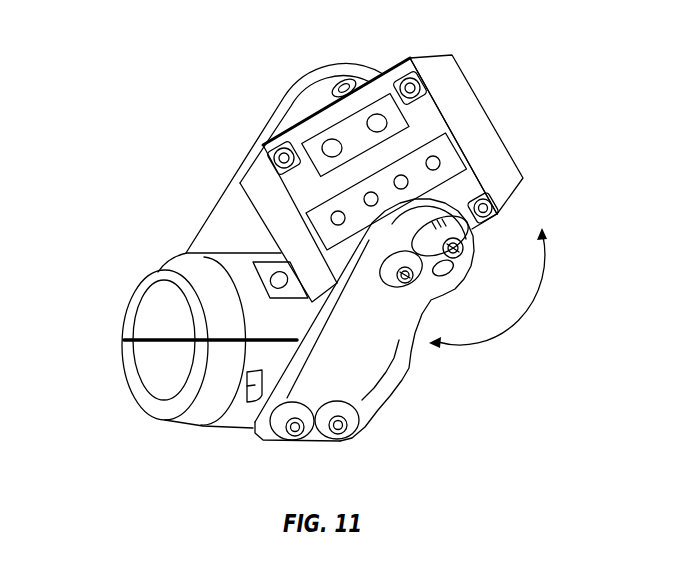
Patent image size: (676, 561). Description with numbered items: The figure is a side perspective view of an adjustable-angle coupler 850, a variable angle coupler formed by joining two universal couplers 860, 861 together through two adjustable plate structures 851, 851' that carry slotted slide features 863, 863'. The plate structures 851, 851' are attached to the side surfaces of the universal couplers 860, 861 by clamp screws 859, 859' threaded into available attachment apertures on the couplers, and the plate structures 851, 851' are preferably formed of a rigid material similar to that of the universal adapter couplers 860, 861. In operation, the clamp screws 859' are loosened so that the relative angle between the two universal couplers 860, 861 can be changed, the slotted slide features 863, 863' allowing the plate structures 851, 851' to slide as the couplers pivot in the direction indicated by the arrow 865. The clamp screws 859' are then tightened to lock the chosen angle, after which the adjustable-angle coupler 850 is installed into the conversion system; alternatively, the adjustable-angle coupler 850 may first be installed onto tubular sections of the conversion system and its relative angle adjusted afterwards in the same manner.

The adjustable-angle coupler 850 is at (112, 91).
The adjustable plate structure 851 is at (284, 183).
The adjustable plate structure 851' is at (364, 320).
The clamp screws 859 is at (314, 450).
The clamp screws 859' is at (437, 284).
The universal coupler 860 is at (460, 87).
The universal coupler 861 is at (228, 421).
The slotted slide feature 863 is at (358, 59).
The slotted slide feature 863' is at (470, 243).
The arrow 865 is at (521, 320).